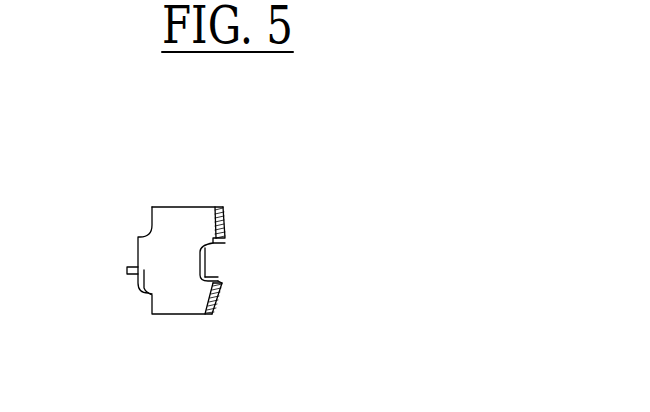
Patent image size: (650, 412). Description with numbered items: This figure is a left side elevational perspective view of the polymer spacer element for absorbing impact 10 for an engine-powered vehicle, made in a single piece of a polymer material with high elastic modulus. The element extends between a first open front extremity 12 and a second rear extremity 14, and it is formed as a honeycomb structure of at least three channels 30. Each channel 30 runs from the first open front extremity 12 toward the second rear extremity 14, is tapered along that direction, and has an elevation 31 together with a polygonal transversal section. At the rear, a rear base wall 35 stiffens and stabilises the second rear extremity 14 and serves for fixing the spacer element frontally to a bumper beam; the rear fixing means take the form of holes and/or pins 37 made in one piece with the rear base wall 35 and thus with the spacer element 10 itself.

The polymer spacer element for absorbing impact 10 is at (412, 213).
The channel 30 is at (243, 275).
The elevation 31 is at (182, 206).
The second rear extremity 14 is at (160, 206).
The first open front extremity 12 is at (203, 206).
The holes and/or pins 37 is at (129, 267).
The rear base wall 35 is at (143, 295).